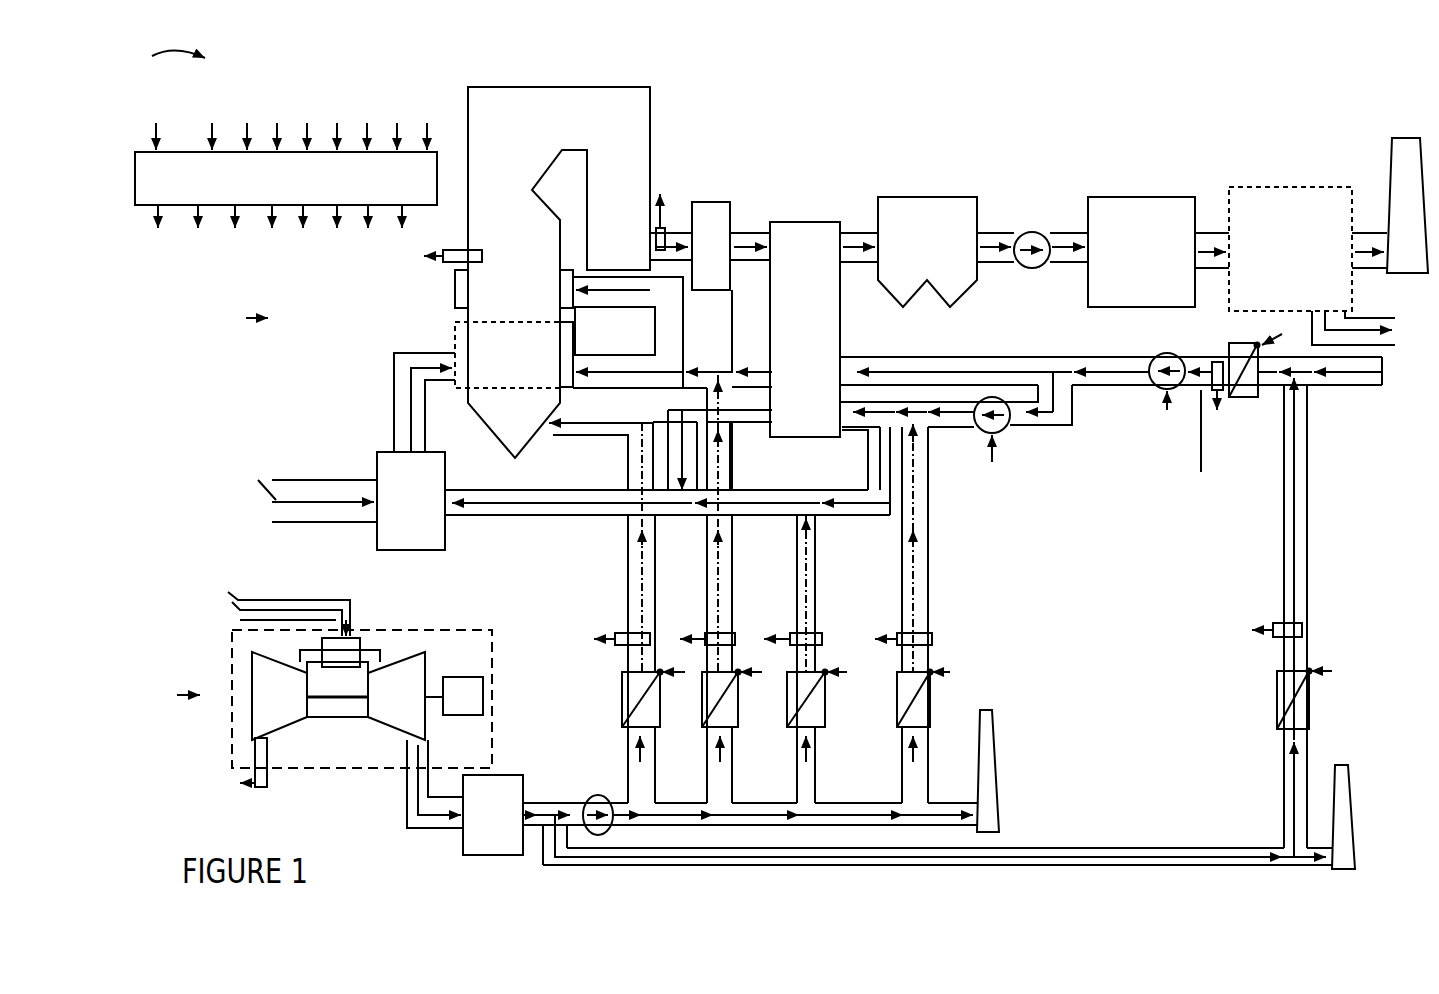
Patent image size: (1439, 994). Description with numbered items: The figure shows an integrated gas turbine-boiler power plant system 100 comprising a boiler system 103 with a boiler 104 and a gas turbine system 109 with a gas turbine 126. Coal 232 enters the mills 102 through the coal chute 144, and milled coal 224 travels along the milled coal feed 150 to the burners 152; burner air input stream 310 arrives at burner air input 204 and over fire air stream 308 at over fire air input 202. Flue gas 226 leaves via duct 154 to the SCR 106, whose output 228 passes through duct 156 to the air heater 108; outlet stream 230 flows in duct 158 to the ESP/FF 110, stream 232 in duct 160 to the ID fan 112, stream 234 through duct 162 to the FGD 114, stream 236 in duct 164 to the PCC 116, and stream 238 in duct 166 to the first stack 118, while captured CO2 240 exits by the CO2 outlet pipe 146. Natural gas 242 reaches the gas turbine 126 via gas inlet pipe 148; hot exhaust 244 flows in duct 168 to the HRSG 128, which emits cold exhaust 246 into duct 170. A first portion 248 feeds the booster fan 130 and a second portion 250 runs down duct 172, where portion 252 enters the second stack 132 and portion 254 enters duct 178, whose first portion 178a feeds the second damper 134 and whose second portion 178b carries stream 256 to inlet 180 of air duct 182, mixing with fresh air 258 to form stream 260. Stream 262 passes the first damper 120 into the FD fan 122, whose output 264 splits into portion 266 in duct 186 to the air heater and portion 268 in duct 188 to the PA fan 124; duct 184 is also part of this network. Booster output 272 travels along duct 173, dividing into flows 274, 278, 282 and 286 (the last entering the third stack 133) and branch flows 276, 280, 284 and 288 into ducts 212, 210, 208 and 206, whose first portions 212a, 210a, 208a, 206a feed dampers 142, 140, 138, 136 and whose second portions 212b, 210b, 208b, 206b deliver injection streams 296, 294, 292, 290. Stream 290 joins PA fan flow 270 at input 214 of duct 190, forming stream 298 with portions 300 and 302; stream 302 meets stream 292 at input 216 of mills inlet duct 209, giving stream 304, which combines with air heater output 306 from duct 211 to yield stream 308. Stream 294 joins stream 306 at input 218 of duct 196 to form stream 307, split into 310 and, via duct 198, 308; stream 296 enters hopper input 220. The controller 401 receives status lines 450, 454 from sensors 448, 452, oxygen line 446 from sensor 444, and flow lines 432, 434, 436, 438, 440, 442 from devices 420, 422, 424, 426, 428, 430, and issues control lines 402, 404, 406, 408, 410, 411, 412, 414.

The integrated gas turbine-boiler power plant system 100 is at (167, 63).
The mills 102 is at (375, 463).
The boiler system 103 is at (245, 317).
The boiler 104 is at (560, 86).
The selective catalytic reduction apparatus 106 is at (709, 202).
The air heater 108 is at (806, 222).
The gas turbine system 109 is at (175, 694).
The electrostatic precipitator/fabric filter 110 is at (930, 196).
The induced draft fan 112 is at (1033, 232).
The flue-gas desulfurization apparatus 114 is at (1141, 197).
The post-combustion capture apparatus 116 is at (1290, 187).
The first stack 118 is at (1400, 138).
The first damper 120 is at (1232, 343).
The forced draft fan 122 is at (1166, 352).
The primary air fan 124 is at (1005, 431).
The gas turbine 126 is at (327, 771).
The HRSG 128 is at (488, 857).
The booster fan 130 is at (596, 796).
The second stack 132 is at (1351, 797).
The third stack 133 is at (1004, 768).
The second damper 134 is at (1309, 701).
The third damper 136 is at (931, 705).
The fourth damper 138 is at (826, 716).
The fifth damper 140 is at (739, 716).
The sixth damper 142 is at (661, 715).
The coal chute 144 is at (301, 478).
The CO2 outlet pipe 146 is at (1372, 318).
The natural gas inlet pipe 148 is at (306, 598).
The milled coal feed 150 is at (395, 412).
The burners 152 is at (450, 348).
The duct 154 is at (676, 232).
The duct 156 is at (749, 232).
The duct 158 is at (848, 232).
The duct 160 is at (1003, 232).
The duct 162 is at (1066, 232).
The duct 164 is at (1213, 232).
The duct 166 is at (1367, 232).
The duct 168 is at (407, 803).
The duct 170 is at (550, 805).
The duct 172 is at (808, 844).
The duct 173 is at (876, 826).
The duct 178 is at (1225, 722).
The first portion of duct 178a is at (1284, 753).
The second portion of duct 178b is at (1284, 579).
The inlet 180 is at (1319, 390).
The air duct 182 is at (1281, 357).
The duct 184 is at (1206, 441).
The duct 186 is at (1058, 356).
The duct 188 is at (1052, 430).
The duct 190 is at (903, 405).
The duct 196 is at (645, 350).
The duct 198 is at (728, 334).
The over fire air input 202 is at (573, 303).
The burner air input 204 is at (573, 348).
The duct 206 is at (969, 613).
The first portion of duct 206a is at (906, 783).
The second portion of duct 206b is at (926, 617).
The duct 208 is at (853, 604).
The first portion of duct 208a is at (823, 765).
The second portion of duct 208b is at (818, 619).
The mills inlet duct 209 is at (868, 484).
The duct 210 is at (779, 702).
The first portion of duct 210a is at (743, 791).
The second portion of duct 210b is at (734, 467).
The duct 211 is at (661, 413).
The duct 212 is at (594, 728).
The first portion of duct 212a is at (627, 761).
The second portion of duct 212b is at (580, 437).
The input 214 is at (926, 426).
The input 216 is at (814, 519).
The input 218 is at (733, 388).
The input 220 is at (556, 431).
The milled coal 224 is at (398, 398).
The exhaust gas stream 226 is at (689, 230).
The SCR output gas stream 228 is at (764, 245).
The outlet gas stream 230 is at (869, 243).
The coal 232 is at (1000, 265).
The outlet gas stream 234 is at (1072, 265).
The outlet gas stream 236 is at (1220, 250).
The outlet gas stream 238 is at (1376, 248).
The captured CO2 240 is at (1378, 331).
The natural gas 242 is at (271, 597).
The hot GT exhaust 244 is at (447, 819).
The cold GT exhaust 246 is at (543, 832).
The first portion of cold GT exhaust 248 is at (624, 800).
The second portion of cold GT exhaust 250 is at (558, 858).
The first portion of cold GT exhaust 252 is at (1318, 867).
The second portion of cold GT exhaust 254 is at (1290, 807).
The cold GT exhaust stream 256 is at (1285, 553).
The fresh air 258 is at (1369, 375).
The gas stream 260 is at (1283, 401).
The gas stream 262 is at (1200, 398).
The gas stream 264 is at (1111, 387).
The first portion of gas stream 266 is at (974, 369).
The second portion of gas stream 268 is at (1021, 424).
The gas stream 270 is at (953, 425).
The cold GT exhaust stream 272 is at (622, 803).
The gas flow 274 is at (681, 812).
The gas flow 276 is at (643, 758).
The gas flow 278 is at (759, 812).
The gas flow 280 is at (719, 759).
The gas flow 282 is at (843, 812).
The gas flow 284 is at (822, 753).
The gas flow 286 is at (905, 812).
The gas flow 288 is at (930, 740).
The second cold GT exhaust gas injection stream 290 is at (918, 523).
The third cold GT exhaust gas injection stream 292 is at (818, 584).
The fourth cold GT exhaust gas injection stream 294 is at (733, 446).
The fifth cold GT exhaust gas injection stream 296 is at (614, 448).
The gas stream 298 is at (882, 395).
The first portion of gas stream 300 is at (939, 395).
The second portion of gas stream 302 is at (847, 507).
The gas stream 304 is at (743, 513).
The output gas stream 306 is at (692, 407).
The gas stream 307 is at (722, 366).
The over fire air stream 308 is at (616, 292).
The burner air input stream 310 is at (612, 381).
The controller 401 is at (135, 184).
The control signal line 402 is at (768, 443).
The control signal line 404 is at (588, 439).
The control signal line 406 is at (544, 451).
The control signal line 408 is at (520, 451).
The control signal line 410 is at (496, 451).
The control signal line 411 is at (818, 275).
The control signal line 412 is at (767, 325).
The control signal line 414 is at (698, 350).
The airflow measurement device 420 is at (1302, 629).
The airflow measurement device 422 is at (927, 635).
The airflow measurement device 424 is at (813, 634).
The airflow measurement device 426 is at (729, 633).
The airflow measurement device 428 is at (657, 632).
The airflow measurement device 430 is at (1214, 362).
The flow rate signal line R1 432 is at (770, 366).
The flow rate signal line R2 434 is at (874, 640).
The flow rate signal line R3 436 is at (765, 637).
The flow rate signal line R4 438 is at (531, 365).
The flow rate signal line R5 440 is at (501, 389).
The flow rate signal line R6 442 is at (823, 274).
The oxygen sensor 444 is at (665, 228).
The oxygen sensor line VO2 446 is at (661, 190).
The boiler on/off sensor 448 is at (446, 254).
The boiler status input signal line BON/OFF 450 is at (428, 290).
The gas turbine on/off sensor 452 is at (259, 790).
The gas turbine status input signal line GTON/OFF 454 is at (222, 798).